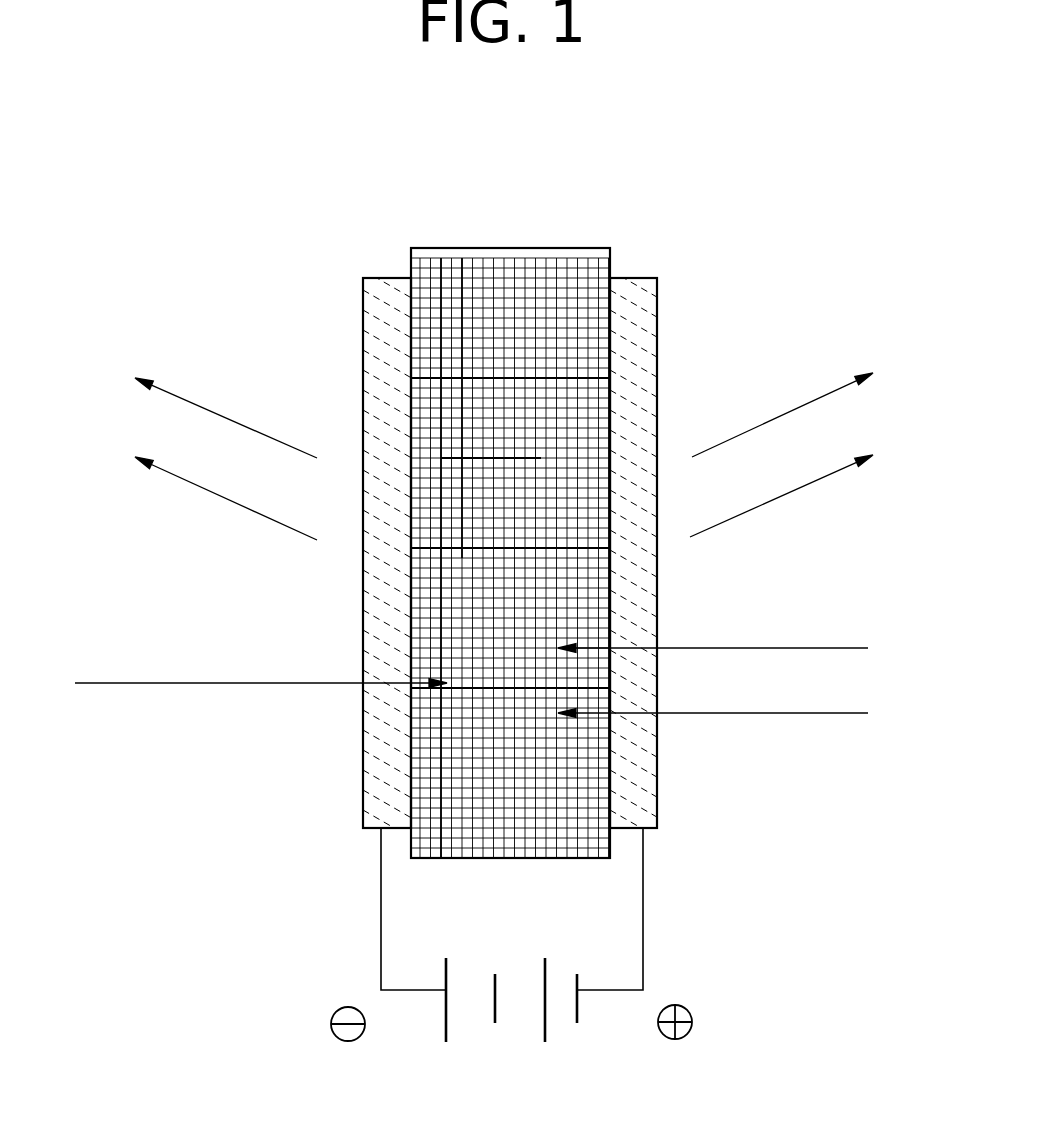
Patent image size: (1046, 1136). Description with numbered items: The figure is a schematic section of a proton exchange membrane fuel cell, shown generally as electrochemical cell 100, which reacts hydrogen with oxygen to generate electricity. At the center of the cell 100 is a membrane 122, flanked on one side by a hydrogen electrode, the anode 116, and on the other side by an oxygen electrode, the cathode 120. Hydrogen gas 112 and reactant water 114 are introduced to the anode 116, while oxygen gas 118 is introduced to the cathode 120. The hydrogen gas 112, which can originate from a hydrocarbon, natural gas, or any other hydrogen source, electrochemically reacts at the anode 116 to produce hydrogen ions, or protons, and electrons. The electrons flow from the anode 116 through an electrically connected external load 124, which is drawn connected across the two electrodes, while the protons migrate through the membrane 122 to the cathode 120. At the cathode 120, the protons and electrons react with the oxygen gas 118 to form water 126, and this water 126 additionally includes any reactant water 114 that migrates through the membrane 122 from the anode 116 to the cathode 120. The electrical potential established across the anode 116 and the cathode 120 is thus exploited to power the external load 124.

The electrochemical cell 100 is at (168, 939).
The hydrogen gas 112 is at (273, 438).
The reactant water 114 is at (753, 713).
The hydrogen electrode (anode) 116 is at (637, 278).
The oxygen gas 118 is at (798, 408).
The oxygen electrode (cathode) 120 is at (383, 278).
The membrane 122 is at (513, 248).
The external load 124 is at (703, 944).
The water 126 is at (277, 520).